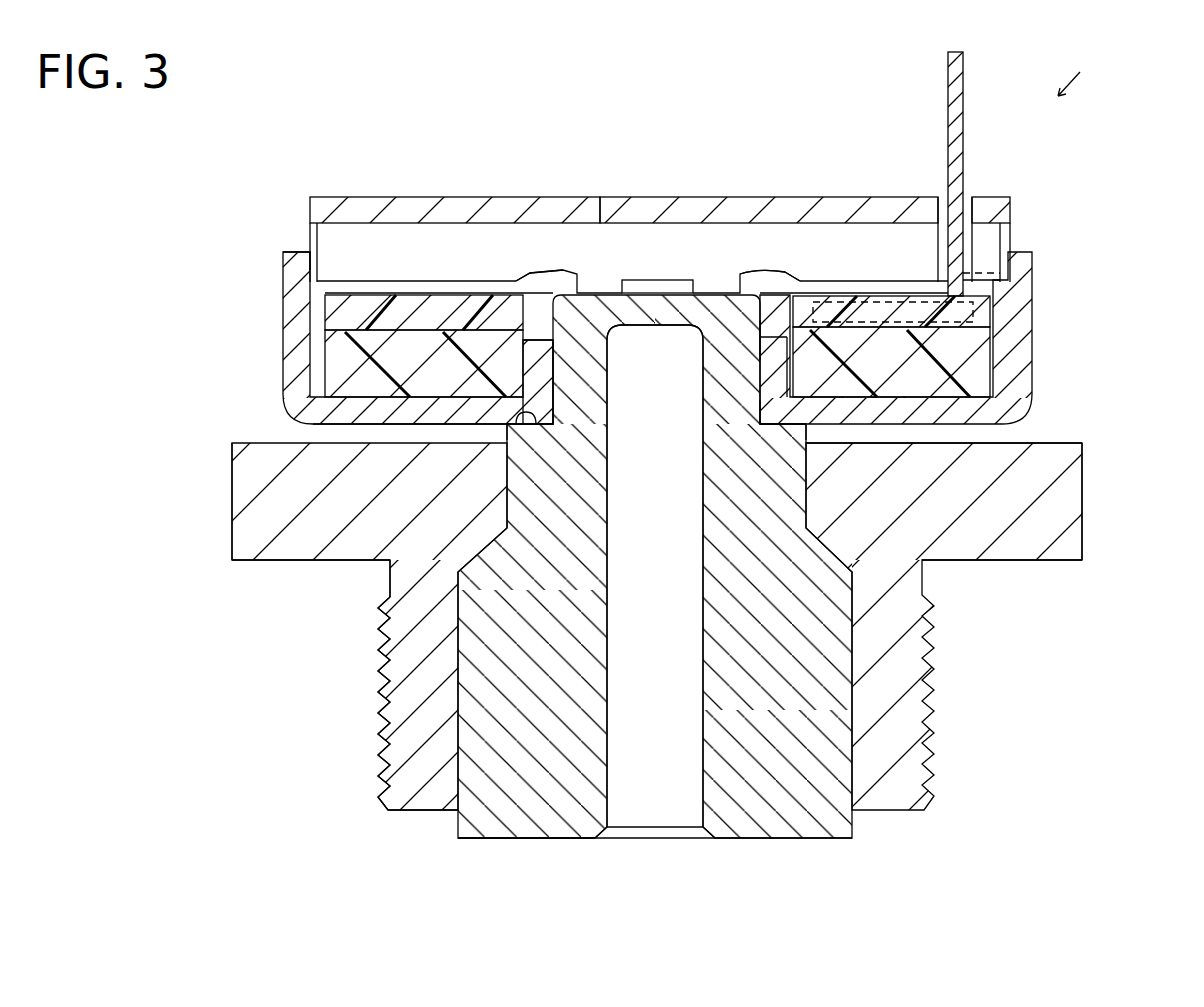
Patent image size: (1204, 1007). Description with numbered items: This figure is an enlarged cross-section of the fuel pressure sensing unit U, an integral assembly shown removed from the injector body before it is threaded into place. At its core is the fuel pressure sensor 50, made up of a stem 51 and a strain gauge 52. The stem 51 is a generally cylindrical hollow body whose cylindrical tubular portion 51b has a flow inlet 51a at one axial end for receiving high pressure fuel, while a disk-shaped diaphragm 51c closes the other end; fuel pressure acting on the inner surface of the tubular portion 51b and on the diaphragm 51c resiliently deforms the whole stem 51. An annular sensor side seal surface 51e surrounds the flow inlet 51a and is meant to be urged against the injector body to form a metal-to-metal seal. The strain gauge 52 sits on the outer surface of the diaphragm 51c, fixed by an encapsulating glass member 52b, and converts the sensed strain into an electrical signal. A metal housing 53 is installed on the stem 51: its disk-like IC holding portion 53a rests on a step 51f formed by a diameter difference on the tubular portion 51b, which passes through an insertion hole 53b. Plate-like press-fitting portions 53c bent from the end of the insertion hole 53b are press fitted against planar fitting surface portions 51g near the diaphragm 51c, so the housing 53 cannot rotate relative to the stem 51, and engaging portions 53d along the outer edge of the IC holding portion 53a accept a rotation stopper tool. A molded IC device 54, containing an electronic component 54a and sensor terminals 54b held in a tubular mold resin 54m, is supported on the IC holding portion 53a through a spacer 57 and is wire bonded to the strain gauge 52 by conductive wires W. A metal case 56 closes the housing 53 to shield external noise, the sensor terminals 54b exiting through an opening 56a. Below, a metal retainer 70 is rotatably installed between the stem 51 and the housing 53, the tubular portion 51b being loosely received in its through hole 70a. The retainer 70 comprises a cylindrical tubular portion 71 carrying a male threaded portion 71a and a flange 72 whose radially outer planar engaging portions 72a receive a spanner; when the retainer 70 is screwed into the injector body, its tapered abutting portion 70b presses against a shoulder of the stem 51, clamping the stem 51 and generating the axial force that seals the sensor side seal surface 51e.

The fuel pressure sensor 50 is at (792, 855).
The stem 51 is at (830, 712).
The flow inlet 51a is at (655, 838).
The cylindrical tubular portion 51b is at (735, 425).
The diaphragm 51c is at (656, 325).
The sensor side seal surface 51e is at (534, 838).
The step 51f is at (515, 448).
The fitting surface portions 51g is at (935, 355).
The strain gauge 52 is at (660, 290).
The glass member 52b is at (710, 282).
The housing 53 is at (300, 388).
The IC holding portion 53a is at (375, 410).
The insertion hole 53b is at (530, 414).
The press-fitting portions 53c is at (540, 368).
The rotation stopper tool engaging portions 53d is at (320, 286).
The molded IC device 54 is at (920, 315).
The electronic component 54a is at (1012, 273).
The sensor terminals 54b is at (948, 100).
The mold resin 54m is at (345, 314).
The case 56 is at (988, 200).
The opening 56a is at (938, 196).
The spacer 57 is at (968, 382).
The retainer 70 is at (255, 586).
The through hole 70a is at (805, 480).
The abutting portion 70b is at (812, 580).
The cylindrical tubular portion 71 is at (420, 710).
The male threaded portion 71a is at (378, 745).
The flange 72 is at (335, 560).
The engaging portions 72a is at (232, 480).
The fuel pressure sensing unit U is at (1072, 69).
The conductive wires W is at (545, 270).